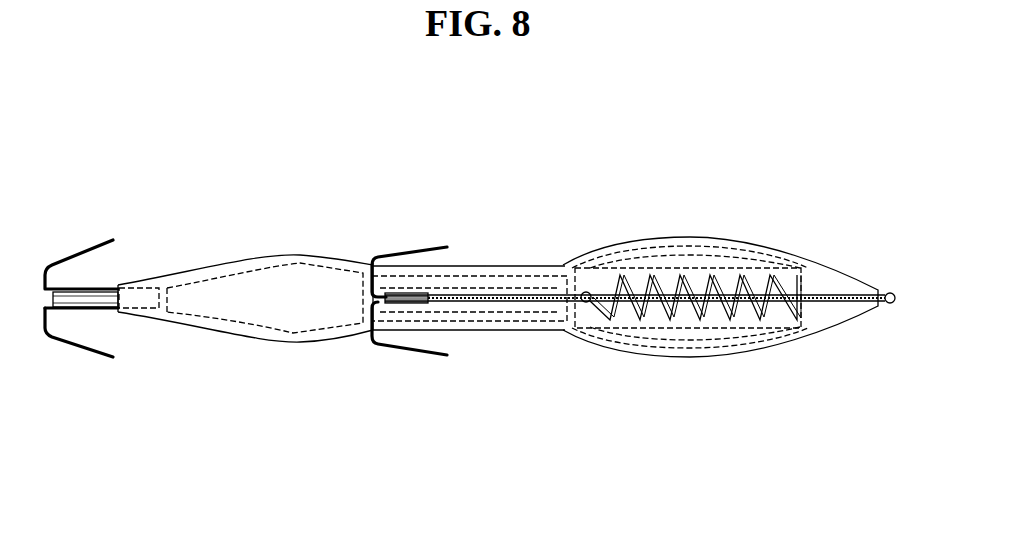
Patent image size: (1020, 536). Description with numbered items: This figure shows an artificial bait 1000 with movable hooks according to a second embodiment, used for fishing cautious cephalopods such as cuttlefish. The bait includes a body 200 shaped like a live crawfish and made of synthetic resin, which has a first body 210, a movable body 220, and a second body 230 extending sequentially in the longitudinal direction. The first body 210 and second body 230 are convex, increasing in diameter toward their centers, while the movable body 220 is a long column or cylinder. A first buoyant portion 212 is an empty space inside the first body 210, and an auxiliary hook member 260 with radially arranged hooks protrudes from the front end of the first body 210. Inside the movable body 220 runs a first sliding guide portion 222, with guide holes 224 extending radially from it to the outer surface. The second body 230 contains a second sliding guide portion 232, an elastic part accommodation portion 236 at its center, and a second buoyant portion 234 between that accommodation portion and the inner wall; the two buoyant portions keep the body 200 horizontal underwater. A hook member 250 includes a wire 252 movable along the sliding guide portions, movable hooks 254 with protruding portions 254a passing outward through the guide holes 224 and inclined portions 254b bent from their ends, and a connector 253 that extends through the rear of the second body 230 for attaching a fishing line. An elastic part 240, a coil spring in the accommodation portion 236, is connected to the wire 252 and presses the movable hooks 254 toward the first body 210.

The surgical instrument 1000 is at (150, 121).
The body 200 is at (399, 178).
The first body 210 is at (281, 255).
The first buoyant portion 212 is at (217, 297).
The movable body 220 is at (531, 266).
The first sliding guide portion 222 is at (466, 283).
The guide holes 224 is at (439, 286).
The second body 230 is at (745, 246).
The second sliding guide portion 232 is at (740, 310).
The second buoyant portion 234 is at (700, 258).
The elastic part accommodation portion 236 is at (658, 250).
The elastic part 240 is at (763, 312).
The hook member 250 is at (517, 328).
The wire 252 is at (533, 302).
The connector 253 is at (889, 292).
The movable hooks 254 is at (452, 437).
The protruding portions 254a is at (346, 335).
The inclined portions 254b is at (418, 356).
The auxiliary hook member 260 is at (74, 254).